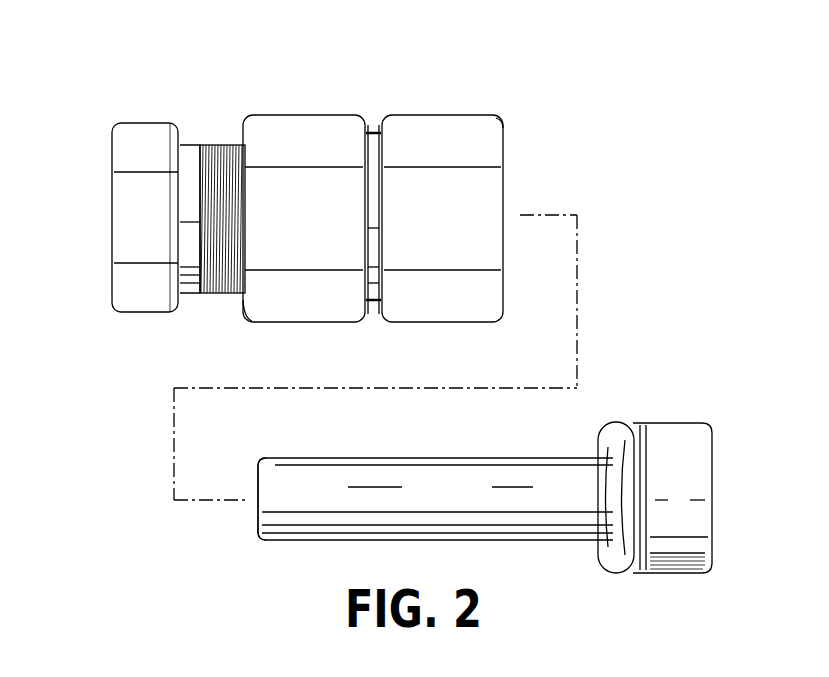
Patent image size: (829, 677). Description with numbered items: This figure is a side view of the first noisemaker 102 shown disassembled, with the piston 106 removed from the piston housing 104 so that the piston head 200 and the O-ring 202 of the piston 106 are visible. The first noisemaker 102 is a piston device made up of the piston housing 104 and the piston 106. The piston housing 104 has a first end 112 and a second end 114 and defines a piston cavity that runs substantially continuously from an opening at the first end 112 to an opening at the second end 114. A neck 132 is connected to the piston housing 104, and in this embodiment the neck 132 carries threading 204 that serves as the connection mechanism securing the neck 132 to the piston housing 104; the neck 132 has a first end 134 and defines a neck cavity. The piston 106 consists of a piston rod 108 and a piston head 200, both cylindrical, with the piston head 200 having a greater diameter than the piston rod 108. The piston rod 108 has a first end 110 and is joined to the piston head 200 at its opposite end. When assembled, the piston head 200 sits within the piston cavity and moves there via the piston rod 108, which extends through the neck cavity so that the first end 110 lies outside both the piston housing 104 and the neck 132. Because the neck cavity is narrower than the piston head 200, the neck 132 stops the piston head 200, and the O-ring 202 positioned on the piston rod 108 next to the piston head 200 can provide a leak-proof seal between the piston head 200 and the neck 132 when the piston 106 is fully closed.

The first noisemaker 102 is at (633, 189).
The piston housing 104 is at (427, 135).
The piston 106 is at (345, 516).
The piston rod 108 is at (317, 485).
The first end 110 is at (260, 518).
The first end 112 is at (242, 303).
The second end 114 is at (507, 147).
The neck 132 is at (192, 141).
The first end 134 is at (110, 182).
The piston head 200 is at (667, 440).
The O-ring 202 is at (610, 566).
The threading 204 is at (222, 141).